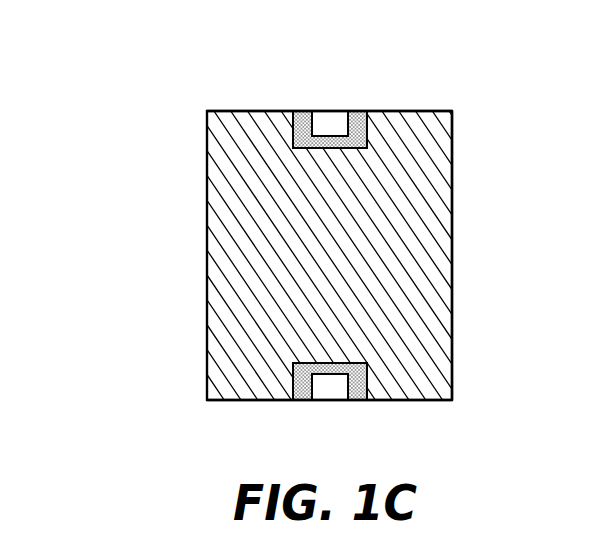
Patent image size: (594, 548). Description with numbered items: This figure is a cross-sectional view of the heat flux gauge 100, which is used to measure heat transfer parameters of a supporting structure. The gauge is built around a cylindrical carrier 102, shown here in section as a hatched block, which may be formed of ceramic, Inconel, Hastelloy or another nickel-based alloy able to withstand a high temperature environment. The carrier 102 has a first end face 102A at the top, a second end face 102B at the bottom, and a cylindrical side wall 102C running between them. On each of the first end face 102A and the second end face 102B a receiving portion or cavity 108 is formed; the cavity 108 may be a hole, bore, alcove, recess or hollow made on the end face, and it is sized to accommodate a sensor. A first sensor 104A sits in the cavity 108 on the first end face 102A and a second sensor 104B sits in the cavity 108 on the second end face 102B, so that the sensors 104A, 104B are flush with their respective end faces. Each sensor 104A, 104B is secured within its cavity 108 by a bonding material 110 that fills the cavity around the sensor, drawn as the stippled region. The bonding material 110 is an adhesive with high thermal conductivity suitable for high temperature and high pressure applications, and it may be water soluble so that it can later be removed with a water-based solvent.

The heat flux gauge 100 is at (122, 104).
The carrier 102 is at (209, 112).
The first end face 102A is at (443, 112).
The second end face 102B is at (435, 400).
The cylindrical side wall 102C is at (453, 242).
The sensor 104A is at (320, 118).
The sensor 104B is at (325, 390).
The cavity 108 is at (366, 128).
The bonding material 110 is at (358, 124).